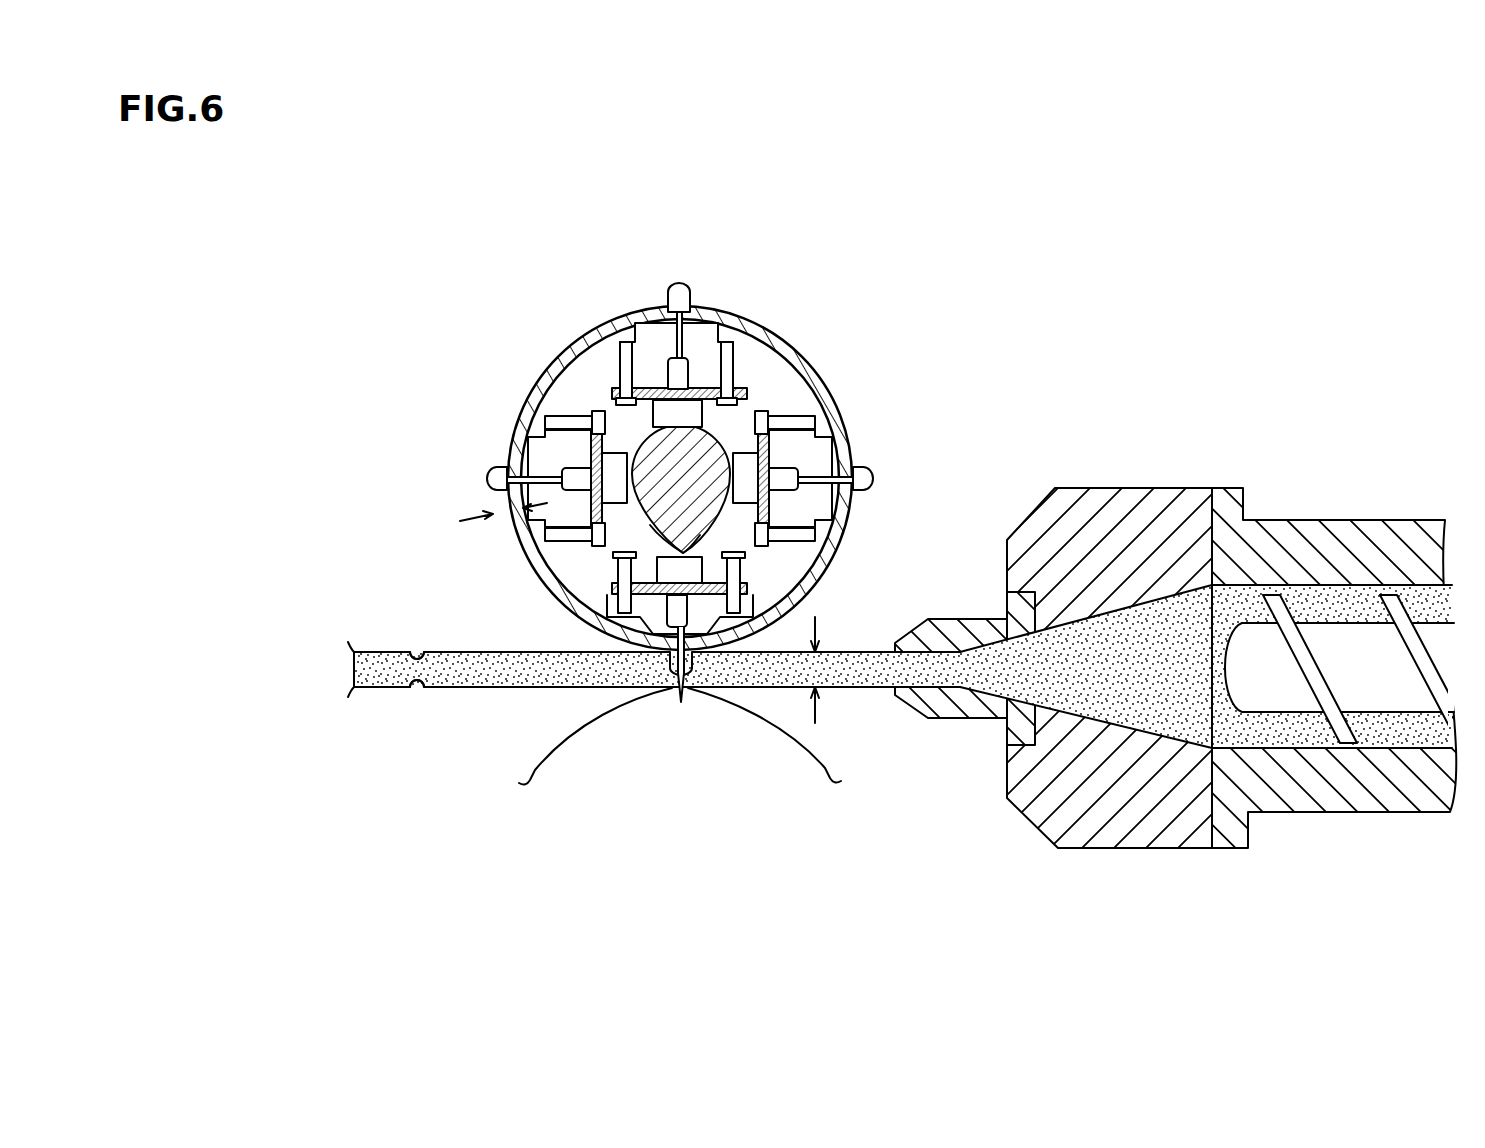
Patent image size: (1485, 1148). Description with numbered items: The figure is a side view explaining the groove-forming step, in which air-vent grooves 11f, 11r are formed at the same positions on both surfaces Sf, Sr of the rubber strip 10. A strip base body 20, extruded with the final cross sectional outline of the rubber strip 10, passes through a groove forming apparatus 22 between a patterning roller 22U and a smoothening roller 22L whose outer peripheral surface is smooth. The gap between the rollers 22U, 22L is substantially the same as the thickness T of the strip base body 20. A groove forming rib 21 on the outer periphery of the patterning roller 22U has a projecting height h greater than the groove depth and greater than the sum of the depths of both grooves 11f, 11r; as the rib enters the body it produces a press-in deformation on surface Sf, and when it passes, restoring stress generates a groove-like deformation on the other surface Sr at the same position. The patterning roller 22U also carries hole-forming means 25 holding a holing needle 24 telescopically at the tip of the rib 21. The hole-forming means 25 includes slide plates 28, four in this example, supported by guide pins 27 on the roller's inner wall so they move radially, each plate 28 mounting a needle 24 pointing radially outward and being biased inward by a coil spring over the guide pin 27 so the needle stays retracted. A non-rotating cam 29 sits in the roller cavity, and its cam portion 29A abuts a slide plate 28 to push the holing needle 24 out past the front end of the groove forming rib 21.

The rubber strip 10 is at (352, 658).
The air-vent groove 11f is at (420, 641).
The air-vent groove 11r is at (424, 698).
The surface Sf is at (359, 652).
The surface Sr is at (378, 690).
The strip base body 20 is at (843, 668).
The groove forming rib 21 is at (675, 283).
The groove forming apparatus 22 is at (894, 341).
The patterning roller 22U is at (774, 367).
The smoothening roller 22L is at (807, 747).
The holing needle 24 is at (868, 472).
The hole-forming means 25 is at (780, 414).
The guide pin 27 is at (800, 414).
The slide plate 28 is at (823, 436).
The cam 29 is at (660, 470).
The cam portion 29A is at (640, 520).
The projecting height h is at (500, 522).
The thickness T is at (816, 617).